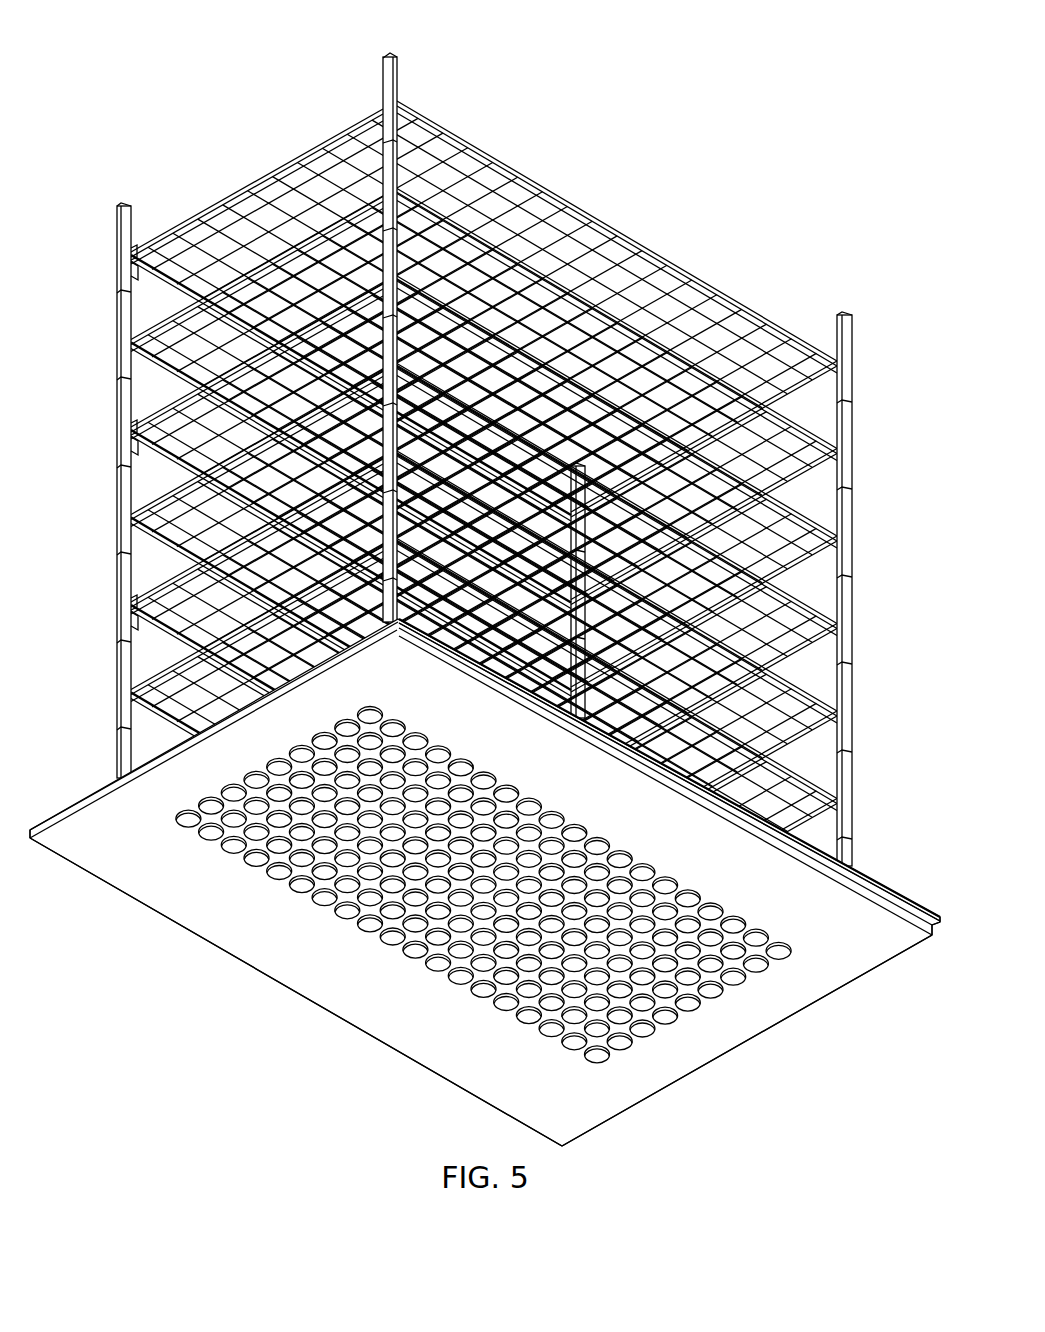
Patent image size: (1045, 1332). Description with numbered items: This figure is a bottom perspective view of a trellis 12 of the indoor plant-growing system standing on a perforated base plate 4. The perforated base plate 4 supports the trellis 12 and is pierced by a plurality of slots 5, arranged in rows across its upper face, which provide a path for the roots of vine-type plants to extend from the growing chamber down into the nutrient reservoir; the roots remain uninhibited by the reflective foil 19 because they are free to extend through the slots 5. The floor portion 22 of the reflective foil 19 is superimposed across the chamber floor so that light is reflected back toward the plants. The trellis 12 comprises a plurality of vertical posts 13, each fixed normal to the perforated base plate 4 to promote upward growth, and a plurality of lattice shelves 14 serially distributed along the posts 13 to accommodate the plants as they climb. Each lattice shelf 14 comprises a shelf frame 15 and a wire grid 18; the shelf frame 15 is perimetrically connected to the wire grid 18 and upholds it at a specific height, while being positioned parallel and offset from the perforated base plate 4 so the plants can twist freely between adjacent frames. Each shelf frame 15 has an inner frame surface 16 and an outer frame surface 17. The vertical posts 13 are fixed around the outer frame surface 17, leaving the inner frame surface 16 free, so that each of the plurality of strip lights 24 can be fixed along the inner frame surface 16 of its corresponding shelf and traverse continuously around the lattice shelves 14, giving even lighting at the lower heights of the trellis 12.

The perforated base plate 4 is at (932, 940).
The slots 5 is at (382, 711).
The trellis 12 is at (853, 342).
The vertical posts 13 is at (386, 75).
The lattice shelves 14 is at (160, 224).
The shelf frame 15 is at (190, 234).
The inner frame surface 16 is at (133, 276).
The outer frame surface 17 is at (130, 253).
The wire grid 18 is at (208, 240).
The reflective foil 19 is at (860, 868).
The floor portion 22 is at (888, 888).
The strip lights 24 is at (178, 280).